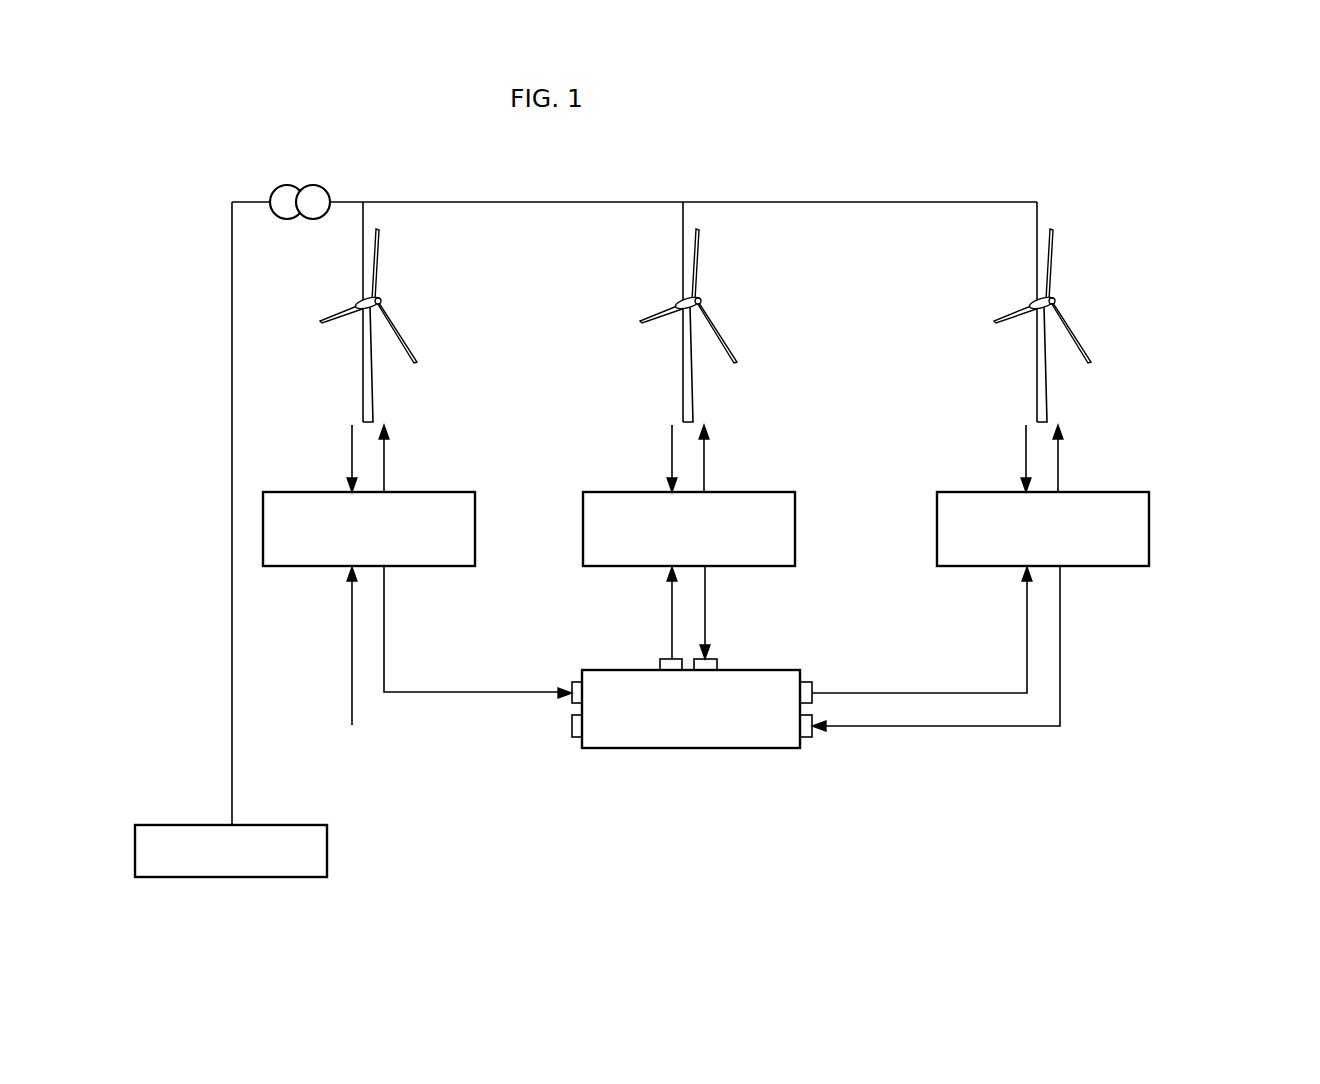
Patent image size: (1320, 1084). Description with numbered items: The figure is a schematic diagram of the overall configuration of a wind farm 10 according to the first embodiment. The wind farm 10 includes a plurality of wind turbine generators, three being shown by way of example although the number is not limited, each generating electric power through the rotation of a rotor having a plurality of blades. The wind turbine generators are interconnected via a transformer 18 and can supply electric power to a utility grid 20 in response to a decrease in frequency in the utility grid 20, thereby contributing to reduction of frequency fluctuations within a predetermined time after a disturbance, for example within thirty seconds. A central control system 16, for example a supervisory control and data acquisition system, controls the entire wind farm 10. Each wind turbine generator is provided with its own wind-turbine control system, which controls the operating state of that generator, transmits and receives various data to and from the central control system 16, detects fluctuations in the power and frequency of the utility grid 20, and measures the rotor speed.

The wind farm 10 is at (775, 146).
The central control system 16 is at (688, 750).
The transformer 18 is at (308, 184).
The utility grid 20 is at (327, 850).